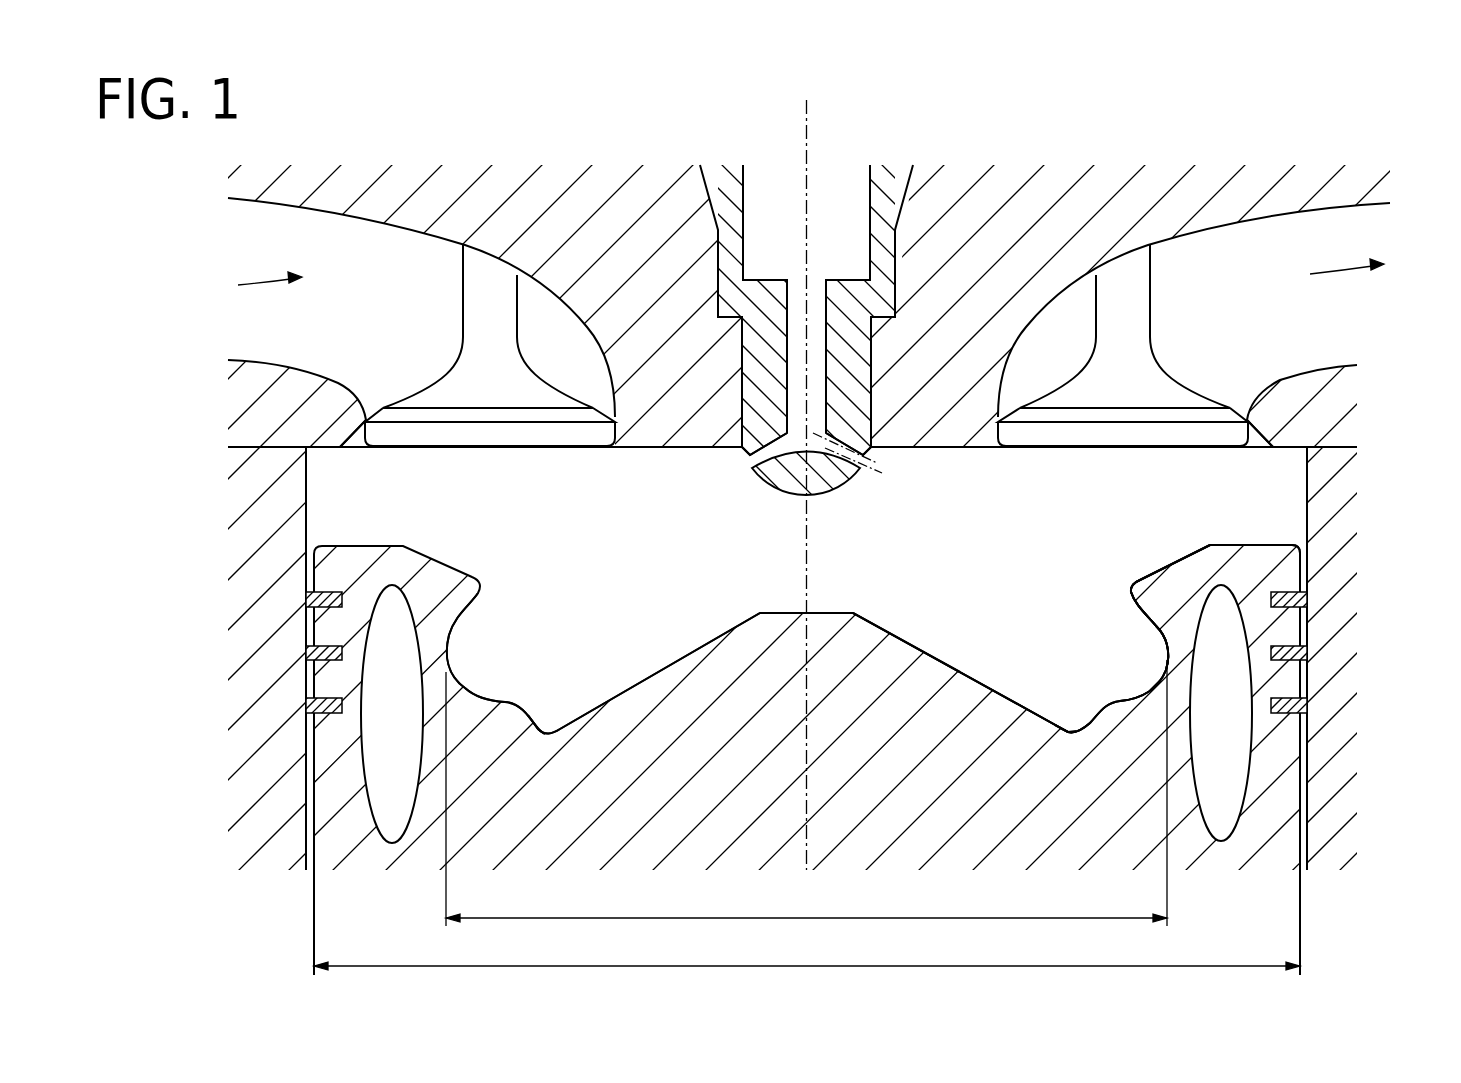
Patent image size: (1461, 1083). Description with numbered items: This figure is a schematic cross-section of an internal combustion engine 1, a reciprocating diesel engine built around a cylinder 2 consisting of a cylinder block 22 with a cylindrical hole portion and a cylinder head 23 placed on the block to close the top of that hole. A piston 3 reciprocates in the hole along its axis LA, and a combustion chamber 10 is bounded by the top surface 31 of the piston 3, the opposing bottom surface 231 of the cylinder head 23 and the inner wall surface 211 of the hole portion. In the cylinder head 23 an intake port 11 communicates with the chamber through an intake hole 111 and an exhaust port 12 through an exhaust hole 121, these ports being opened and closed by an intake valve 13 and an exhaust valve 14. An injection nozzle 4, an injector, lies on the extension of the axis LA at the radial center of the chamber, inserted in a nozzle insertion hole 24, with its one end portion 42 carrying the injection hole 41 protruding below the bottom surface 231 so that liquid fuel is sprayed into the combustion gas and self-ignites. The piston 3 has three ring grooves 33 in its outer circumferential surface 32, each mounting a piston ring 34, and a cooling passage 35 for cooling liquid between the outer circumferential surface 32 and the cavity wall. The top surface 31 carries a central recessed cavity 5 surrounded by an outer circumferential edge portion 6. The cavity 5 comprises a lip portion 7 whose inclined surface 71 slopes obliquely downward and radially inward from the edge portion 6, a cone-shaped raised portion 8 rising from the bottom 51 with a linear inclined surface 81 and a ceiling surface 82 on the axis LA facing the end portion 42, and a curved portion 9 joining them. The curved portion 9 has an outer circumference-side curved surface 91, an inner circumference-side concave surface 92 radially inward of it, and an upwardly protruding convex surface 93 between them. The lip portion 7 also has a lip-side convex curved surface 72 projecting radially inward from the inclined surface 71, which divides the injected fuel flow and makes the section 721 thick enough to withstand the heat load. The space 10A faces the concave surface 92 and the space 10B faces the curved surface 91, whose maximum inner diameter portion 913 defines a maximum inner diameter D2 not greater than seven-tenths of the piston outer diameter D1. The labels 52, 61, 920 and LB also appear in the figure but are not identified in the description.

The internal combustion engine 1 is at (293, 113).
The cylinder 2 is at (1432, 397).
The cylinder block 22 is at (1325, 467).
The cylinder head 23 is at (1325, 413).
The inner wall surface 211 is at (1307, 520).
The bottom surface 231 is at (685, 449).
The intake port 11 is at (380, 208).
The intake hole 111 is at (372, 430).
The exhaust port 12 is at (1230, 208).
The exhaust hole 121 is at (1255, 430).
The intake valve 13 is at (428, 380).
The exhaust valve 14 is at (1185, 380).
The injection nozzle 4 is at (897, 240).
The injection hole 41 is at (755, 462).
The one end portion 42 is at (773, 486).
The nozzle insertion hole 24 is at (873, 380).
The piston 3 is at (1306, 800).
The top surface 31 is at (703, 646).
The outer circumferential surface 32 is at (1307, 768).
The ring groove 33 is at (1303, 620).
The piston ring 34 is at (1308, 599).
The cooling passage 35 is at (1250, 842).
The cavity 5 is at (913, 646).
The bottom 51 is at (1077, 718).
The cavity bottom point 52 is at (1068, 735).
The outer circumferential edge portion 6 is at (1258, 545).
The top surface 61 is at (1258, 545).
The lip portion 7 is at (1180, 559).
The inclined surface 71 is at (1180, 559).
The lip-side convex curved surface 72 is at (1130, 588).
The section 721 is at (1157, 592).
The raised portion 8 is at (984, 685).
The inclined surface 81 is at (945, 664).
The ceiling surface 82 is at (835, 613).
The curved portion 9 is at (1107, 703).
The outer circumference-side curved surface 91 is at (467, 688).
The inner circumference-side concave surface 92 is at (542, 731).
The recess bottom point 920 is at (542, 731).
The convex surface 93 is at (508, 701).
The maximum inner diameter portion 913 is at (1167, 653).
The combustion chamber 10 is at (585, 533).
The space 10A is at (1097, 904).
The space 10B is at (1167, 653).
The axis LA is at (806, 120).
The fuel spray axis LB is at (876, 468).
The outer diameter D1 is at (807, 954).
The maximum inner diameter D2 is at (806, 793).